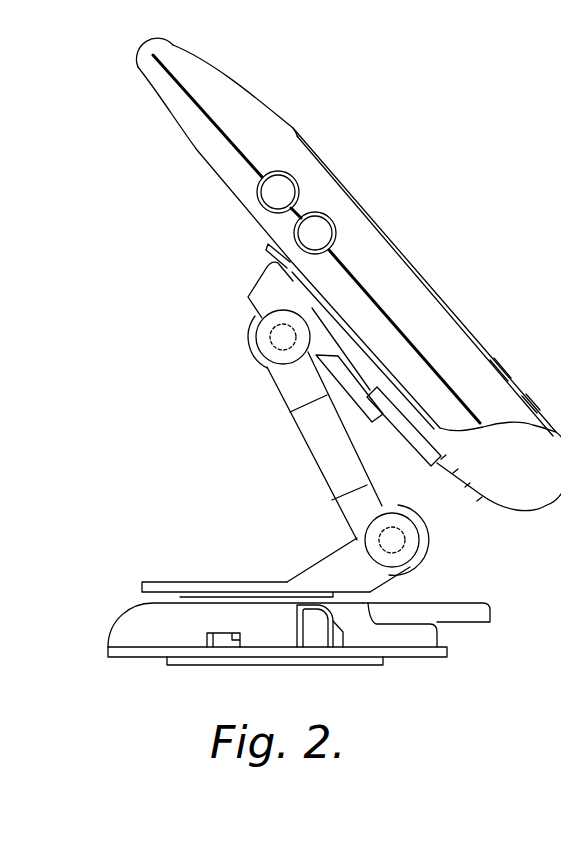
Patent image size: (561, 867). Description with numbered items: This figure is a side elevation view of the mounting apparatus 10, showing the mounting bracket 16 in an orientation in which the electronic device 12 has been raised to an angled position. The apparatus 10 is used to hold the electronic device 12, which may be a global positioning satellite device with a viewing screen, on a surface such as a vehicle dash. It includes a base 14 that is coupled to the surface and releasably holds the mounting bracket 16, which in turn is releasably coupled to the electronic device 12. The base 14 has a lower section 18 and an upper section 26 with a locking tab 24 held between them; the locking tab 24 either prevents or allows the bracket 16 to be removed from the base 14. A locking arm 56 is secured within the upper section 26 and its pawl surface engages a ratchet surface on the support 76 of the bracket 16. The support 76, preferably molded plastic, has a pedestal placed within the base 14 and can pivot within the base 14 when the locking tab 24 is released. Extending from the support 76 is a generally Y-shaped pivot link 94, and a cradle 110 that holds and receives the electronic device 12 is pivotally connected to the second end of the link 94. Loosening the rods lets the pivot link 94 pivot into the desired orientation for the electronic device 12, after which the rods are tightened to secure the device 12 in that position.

The mounting apparatus 10 is at (191, 498).
The electronic device 12 is at (258, 107).
The base 14 is at (115, 608).
The mounting bracket 16 is at (470, 553).
The lower section 18 is at (448, 652).
The locking tab 24 is at (315, 638).
The upper section 26 is at (110, 642).
The locking arm 56 is at (493, 617).
The support 76 is at (158, 582).
The pivot link 94 is at (327, 475).
The cradle 110 is at (258, 291).